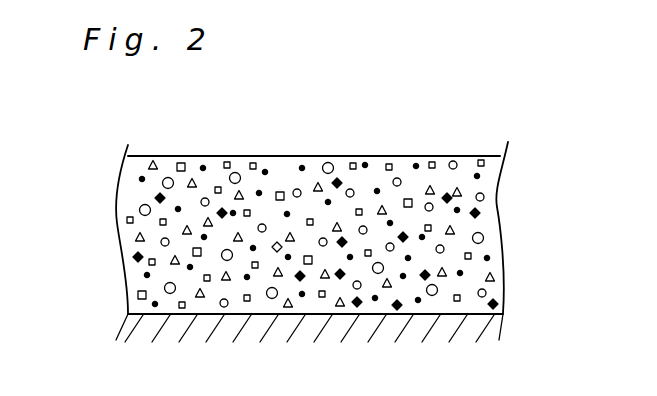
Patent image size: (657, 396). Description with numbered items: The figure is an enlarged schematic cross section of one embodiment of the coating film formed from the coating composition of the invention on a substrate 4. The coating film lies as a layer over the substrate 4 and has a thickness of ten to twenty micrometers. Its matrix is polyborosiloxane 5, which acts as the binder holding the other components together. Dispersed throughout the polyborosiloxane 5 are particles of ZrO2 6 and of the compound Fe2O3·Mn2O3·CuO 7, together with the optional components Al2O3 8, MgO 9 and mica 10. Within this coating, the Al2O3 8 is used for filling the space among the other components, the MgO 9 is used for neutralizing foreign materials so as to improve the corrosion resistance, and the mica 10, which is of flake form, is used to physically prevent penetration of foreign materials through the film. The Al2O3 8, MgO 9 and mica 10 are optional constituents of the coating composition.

The substrate 4 is at (309, 345).
The polyborosiloxane 5 is at (283, 167).
The ZrO2 6 is at (482, 233).
The Fe2O3·Mn2O3·CuO 7 is at (140, 181).
The Al2O3 8 is at (493, 276).
The MgO 9 is at (138, 295).
The mica 10 is at (497, 303).